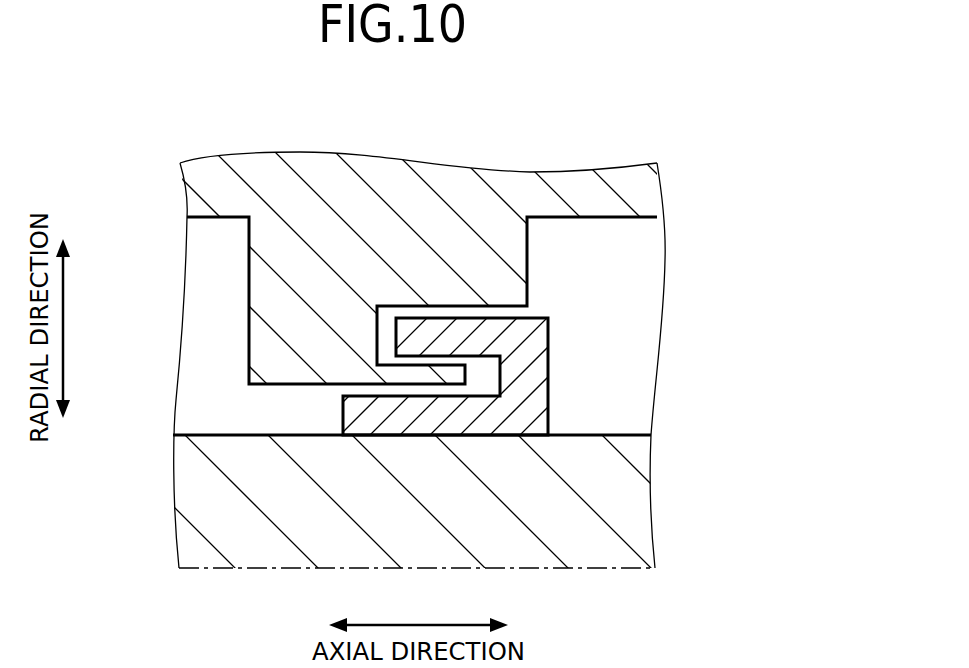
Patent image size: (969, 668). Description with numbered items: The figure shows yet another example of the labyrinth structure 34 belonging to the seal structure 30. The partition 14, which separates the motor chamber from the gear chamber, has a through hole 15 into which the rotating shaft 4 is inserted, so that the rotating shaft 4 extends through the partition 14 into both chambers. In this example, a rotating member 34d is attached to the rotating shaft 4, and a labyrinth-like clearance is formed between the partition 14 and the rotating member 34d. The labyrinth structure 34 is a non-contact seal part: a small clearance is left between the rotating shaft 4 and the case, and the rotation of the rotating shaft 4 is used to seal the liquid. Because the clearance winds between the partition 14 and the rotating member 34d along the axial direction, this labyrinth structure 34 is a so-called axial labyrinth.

The seal structure 30 is at (601, 121).
The partition 14 is at (387, 185).
The rotating member 34d is at (530, 375).
The rotating shaft 4 is at (630, 500).
The labyrinth structure 34 is at (314, 394).
The through hole 15 is at (337, 388).